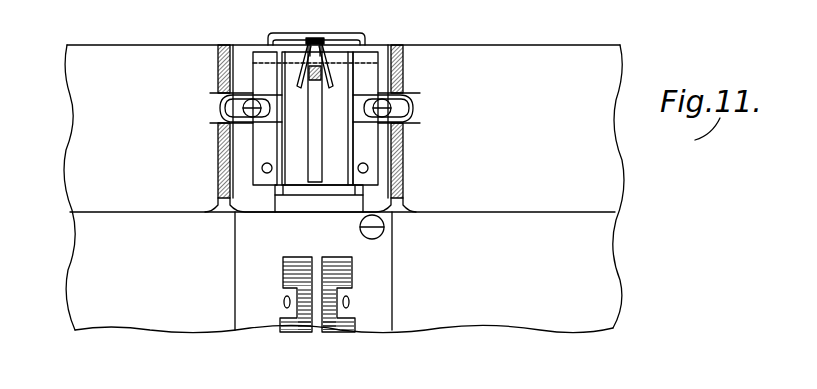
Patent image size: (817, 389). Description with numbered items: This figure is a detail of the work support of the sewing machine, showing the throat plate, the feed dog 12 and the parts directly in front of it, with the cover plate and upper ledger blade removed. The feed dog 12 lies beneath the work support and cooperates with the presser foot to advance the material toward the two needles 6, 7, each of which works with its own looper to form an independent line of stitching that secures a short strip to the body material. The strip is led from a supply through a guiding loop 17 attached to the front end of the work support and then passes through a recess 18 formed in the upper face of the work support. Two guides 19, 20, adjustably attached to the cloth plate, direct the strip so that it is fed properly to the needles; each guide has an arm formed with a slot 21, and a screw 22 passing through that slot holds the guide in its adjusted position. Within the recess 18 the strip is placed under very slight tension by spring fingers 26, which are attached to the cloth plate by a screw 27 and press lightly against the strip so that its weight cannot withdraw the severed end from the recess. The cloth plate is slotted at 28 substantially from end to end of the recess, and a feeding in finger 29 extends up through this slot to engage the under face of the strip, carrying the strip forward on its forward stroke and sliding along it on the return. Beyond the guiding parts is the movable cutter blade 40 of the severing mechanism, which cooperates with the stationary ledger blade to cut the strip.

The needle 6 is at (283, 300).
The needle 7 is at (350, 300).
The feed dog 12 is at (347, 273).
The guiding loop 17 is at (320, 40).
The recess 18 is at (347, 87).
The guide 19 is at (357, 143).
The guide 20 is at (278, 138).
The slot 21 is at (398, 103).
The screw 22 is at (413, 117).
The spring fingers 26 is at (304, 58).
The screw 27 is at (311, 40).
The slot 28 is at (317, 143).
The feeding in finger 29 is at (318, 78).
The movable cutter blade 40 is at (321, 190).